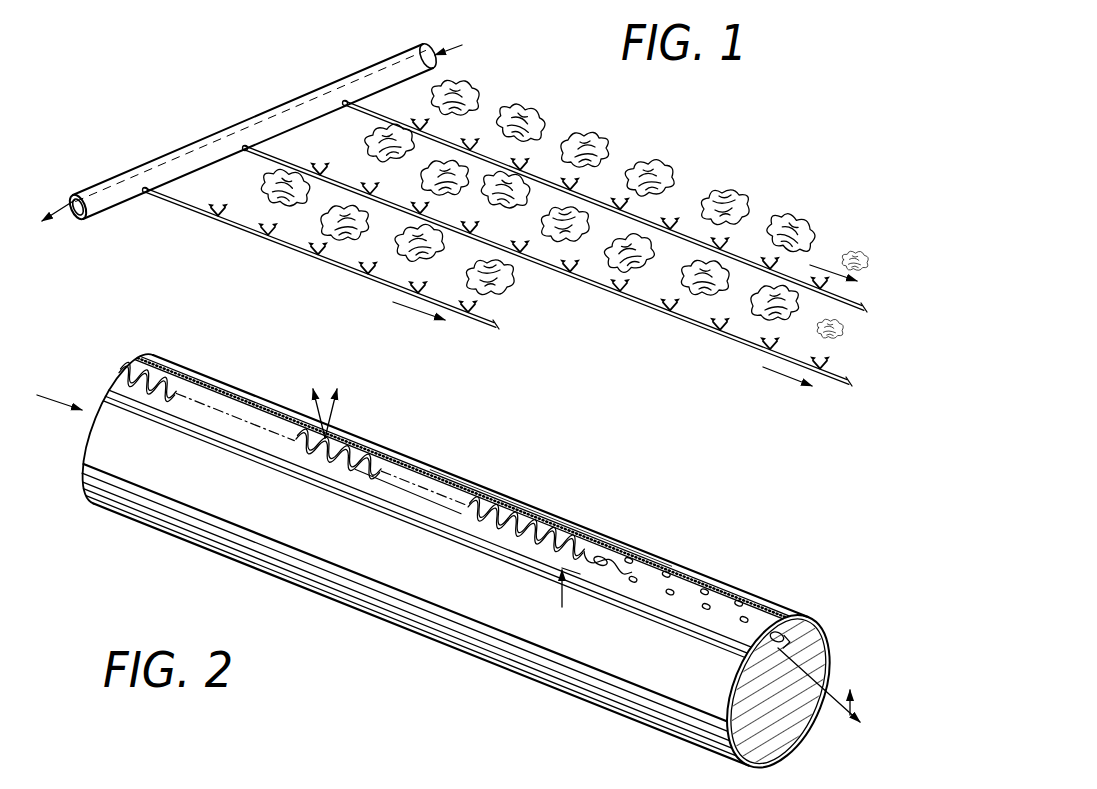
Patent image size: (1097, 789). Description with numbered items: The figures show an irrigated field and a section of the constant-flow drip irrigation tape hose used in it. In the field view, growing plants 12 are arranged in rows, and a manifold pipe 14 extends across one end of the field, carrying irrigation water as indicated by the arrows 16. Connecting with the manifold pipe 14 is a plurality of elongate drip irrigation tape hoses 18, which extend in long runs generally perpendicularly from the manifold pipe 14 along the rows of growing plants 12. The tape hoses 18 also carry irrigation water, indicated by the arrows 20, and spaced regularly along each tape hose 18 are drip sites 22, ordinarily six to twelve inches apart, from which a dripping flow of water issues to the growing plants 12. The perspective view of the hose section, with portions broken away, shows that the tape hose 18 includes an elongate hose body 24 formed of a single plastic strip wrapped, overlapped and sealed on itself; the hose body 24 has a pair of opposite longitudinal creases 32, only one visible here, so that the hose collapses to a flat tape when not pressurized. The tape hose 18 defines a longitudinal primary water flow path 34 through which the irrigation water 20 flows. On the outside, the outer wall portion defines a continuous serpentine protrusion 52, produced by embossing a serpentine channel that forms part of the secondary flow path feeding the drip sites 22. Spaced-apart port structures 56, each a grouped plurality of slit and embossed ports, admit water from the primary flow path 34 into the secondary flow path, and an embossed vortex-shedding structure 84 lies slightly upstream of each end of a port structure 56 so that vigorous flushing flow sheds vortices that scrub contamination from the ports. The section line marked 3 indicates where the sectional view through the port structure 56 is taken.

In FIG. 1, the growing plants 12 is at (512, 118).
In FIG. 1, the manifold pipe 14 is at (270, 114).
In FIG. 1, the arrows indicating irrigation water 16 is at (50, 214).
In FIG. 1, the constant-flow drip irrigation tape hose 18 is at (375, 279).
In FIG. 2, the constant-flow drip irrigation tape hose 18 is at (305, 574).
In FIG. 1, the arrows indicating water flow 20 is at (408, 314).
In FIG. 2, the arrows indicating water flow 20 is at (53, 400).
In FIG. 1, the drip sites 22 is at (419, 114).
In FIG. 2, the drip sites 22 is at (338, 430).
In FIG. 2, the hose body 24 is at (350, 594).
In FIG. 2, the longitudinal creases 32 is at (613, 682).
In FIG. 2, the primary water flow path 34 is at (790, 742).
In FIG. 2, the serpentine protrusion 52 is at (535, 514).
In FIG. 2, the port structure 56 is at (675, 592).
In FIG. 2, the vortex-shedding structure 84 is at (792, 650).
In FIG. 2, the section line 3- 3 is at (703, 646).